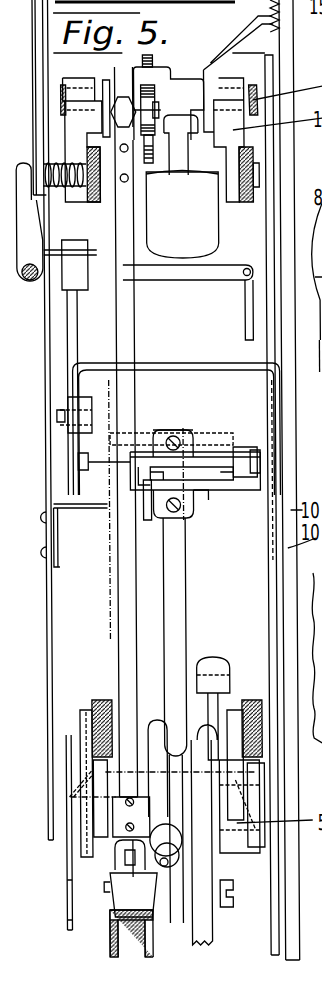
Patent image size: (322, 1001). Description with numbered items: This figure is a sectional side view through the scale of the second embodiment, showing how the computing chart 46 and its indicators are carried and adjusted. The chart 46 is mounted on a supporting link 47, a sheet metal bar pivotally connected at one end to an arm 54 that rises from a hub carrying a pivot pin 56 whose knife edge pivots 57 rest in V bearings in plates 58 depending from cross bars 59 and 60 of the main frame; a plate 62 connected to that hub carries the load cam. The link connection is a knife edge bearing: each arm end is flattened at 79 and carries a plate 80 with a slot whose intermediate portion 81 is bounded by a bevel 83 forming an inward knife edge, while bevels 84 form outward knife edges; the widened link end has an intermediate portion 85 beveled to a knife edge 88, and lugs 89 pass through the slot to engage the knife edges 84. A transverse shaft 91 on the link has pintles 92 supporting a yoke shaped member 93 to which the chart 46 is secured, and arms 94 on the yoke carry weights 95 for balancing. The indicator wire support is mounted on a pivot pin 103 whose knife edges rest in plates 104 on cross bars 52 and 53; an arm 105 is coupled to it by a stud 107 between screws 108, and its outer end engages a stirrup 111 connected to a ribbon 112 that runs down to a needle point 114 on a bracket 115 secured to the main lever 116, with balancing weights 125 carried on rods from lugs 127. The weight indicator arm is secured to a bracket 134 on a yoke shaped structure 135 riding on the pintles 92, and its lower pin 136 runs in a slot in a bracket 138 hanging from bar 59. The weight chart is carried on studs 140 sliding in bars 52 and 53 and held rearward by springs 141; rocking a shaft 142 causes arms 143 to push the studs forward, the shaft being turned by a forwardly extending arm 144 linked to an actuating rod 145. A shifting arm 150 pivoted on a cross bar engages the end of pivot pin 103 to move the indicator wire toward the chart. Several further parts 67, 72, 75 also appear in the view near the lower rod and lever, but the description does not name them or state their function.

The chart 46 is at (264, 598).
The supporting member or link 47 is at (217, 443).
The cross bar 52 is at (90, 202).
The cross bar 53 is at (246, 202).
The arm 54 is at (179, 612).
The pivot pin 56 is at (147, 820).
The knife edge pivots 57 is at (143, 790).
The plates 58 is at (75, 725).
The cross bar 59 is at (92, 700).
The cross bar 60 is at (249, 700).
The plate 62 is at (218, 855).
The rod 67 is at (186, 942).
The stop 72 is at (228, 905).
The fork 75 is at (152, 720).
The flattened end portion 79 is at (180, 430).
The plate 80 is at (145, 502).
The intermediate portion of slot 81 is at (185, 450).
The bevel 83 is at (187, 510).
The bevel 84 is at (140, 472).
The intermediate portion of link end 85 is at (162, 432).
The knife edge 88 is at (310, 370).
The lugs or fingers 89 is at (212, 490).
The transverse shaft 91 is at (239, 450).
The pintles 92 is at (75, 463).
The yoke shaped member 93 is at (203, 371).
The arms 94 is at (70, 345).
The weights 95 is at (70, 325).
The pivot pin 103 is at (213, 82).
The plates 104 is at (103, 114).
The arm 105 is at (106, 82).
The stud or projection 107 is at (155, 106).
The screws 108 is at (152, 52).
The stirrup 111 is at (124, 112).
The ribbon 112 is at (117, 337).
The needle point 114 is at (134, 878).
The bracket 115 is at (104, 862).
The main lever 116 is at (104, 946).
The weights 125 is at (182, 215).
The lugs 127 is at (180, 178).
The bracket 134 is at (62, 509).
The yoke shaped structure 135 is at (101, 509).
The pin 136 is at (64, 893).
The bracket 138 is at (61, 925).
The rods or elongated studs 140 is at (50, 160).
The springs 141 is at (61, 193).
The shaft 142 is at (27, 281).
The arms 143 is at (22, 164).
The forwardly extending arm 144 is at (180, 281).
The actuating rod 145 is at (243, 327).
The arm 150 is at (60, 86).